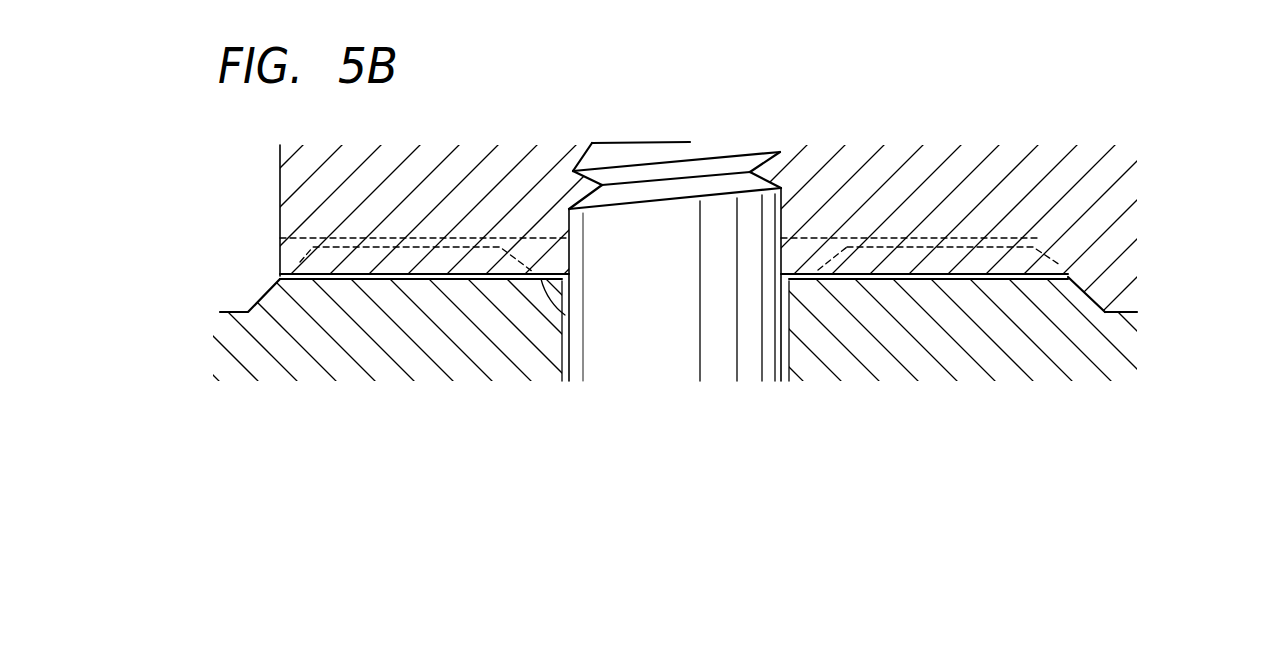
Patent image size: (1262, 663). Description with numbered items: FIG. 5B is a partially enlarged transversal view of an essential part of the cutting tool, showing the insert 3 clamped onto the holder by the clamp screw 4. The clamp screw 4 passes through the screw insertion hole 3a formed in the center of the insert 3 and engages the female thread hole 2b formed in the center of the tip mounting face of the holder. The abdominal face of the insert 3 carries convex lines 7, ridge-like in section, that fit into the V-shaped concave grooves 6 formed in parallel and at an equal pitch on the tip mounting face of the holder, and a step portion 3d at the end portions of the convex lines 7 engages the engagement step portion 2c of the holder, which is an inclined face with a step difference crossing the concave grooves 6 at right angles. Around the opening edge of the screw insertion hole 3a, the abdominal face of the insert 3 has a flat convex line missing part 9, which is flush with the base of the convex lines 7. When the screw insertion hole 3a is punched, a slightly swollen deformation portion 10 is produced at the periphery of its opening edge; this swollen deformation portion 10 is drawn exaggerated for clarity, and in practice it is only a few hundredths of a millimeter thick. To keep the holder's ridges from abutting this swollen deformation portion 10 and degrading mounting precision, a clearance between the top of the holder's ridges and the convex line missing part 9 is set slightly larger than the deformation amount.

The female thread hole 2b is at (776, 149).
The engagement step portion 2c is at (1096, 278).
The insert 3 is at (887, 380).
The screw insertion hole 3a is at (567, 371).
The step portion 3d is at (265, 298).
The clamp screw 4 is at (631, 150).
The concave grooves 6 is at (282, 250).
The convex lines 7 is at (300, 263).
The convex line missing part 9 is at (812, 265).
The swollen deformation portion 10 is at (545, 277).